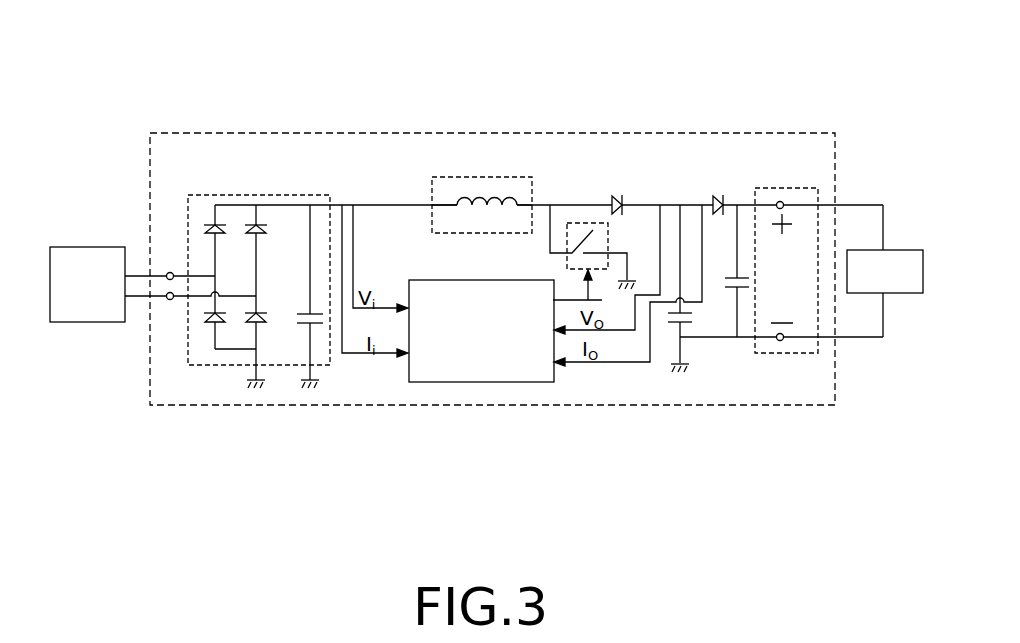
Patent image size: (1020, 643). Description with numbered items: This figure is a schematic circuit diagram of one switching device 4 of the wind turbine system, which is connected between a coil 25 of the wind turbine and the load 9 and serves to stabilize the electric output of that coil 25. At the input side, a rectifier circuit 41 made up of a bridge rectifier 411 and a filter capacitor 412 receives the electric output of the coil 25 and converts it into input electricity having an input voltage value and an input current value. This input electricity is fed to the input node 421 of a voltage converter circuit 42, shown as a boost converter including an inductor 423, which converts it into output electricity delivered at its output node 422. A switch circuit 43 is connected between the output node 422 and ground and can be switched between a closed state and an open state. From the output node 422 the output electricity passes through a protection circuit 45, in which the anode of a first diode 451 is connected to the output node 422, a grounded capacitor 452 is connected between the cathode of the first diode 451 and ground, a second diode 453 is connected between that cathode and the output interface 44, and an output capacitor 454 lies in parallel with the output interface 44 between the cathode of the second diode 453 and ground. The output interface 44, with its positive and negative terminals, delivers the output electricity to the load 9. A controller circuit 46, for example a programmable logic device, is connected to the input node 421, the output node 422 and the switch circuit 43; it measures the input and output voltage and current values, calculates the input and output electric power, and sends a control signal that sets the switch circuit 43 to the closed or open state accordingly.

The switching device 4 is at (177, 124).
The coil 25 is at (82, 245).
The rectifier circuit 41 is at (247, 267).
The bridge rectifier 411 is at (208, 324).
The filter capacitor 412 is at (303, 326).
The voltage converter circuit 42 is at (470, 152).
The input node 421 is at (432, 204).
The output node 422 is at (532, 204).
The inductor 423 is at (493, 197).
The switch circuit 43 is at (592, 223).
The output interface 44 is at (778, 188).
The protection circuit 45 is at (747, 256).
The first diode 451 is at (613, 203).
The grounded capacitor 452 is at (678, 328).
The second diode 453 is at (717, 195).
The output capacitor 454 is at (733, 289).
The controller circuit 46 is at (485, 383).
The load 9 is at (905, 213).